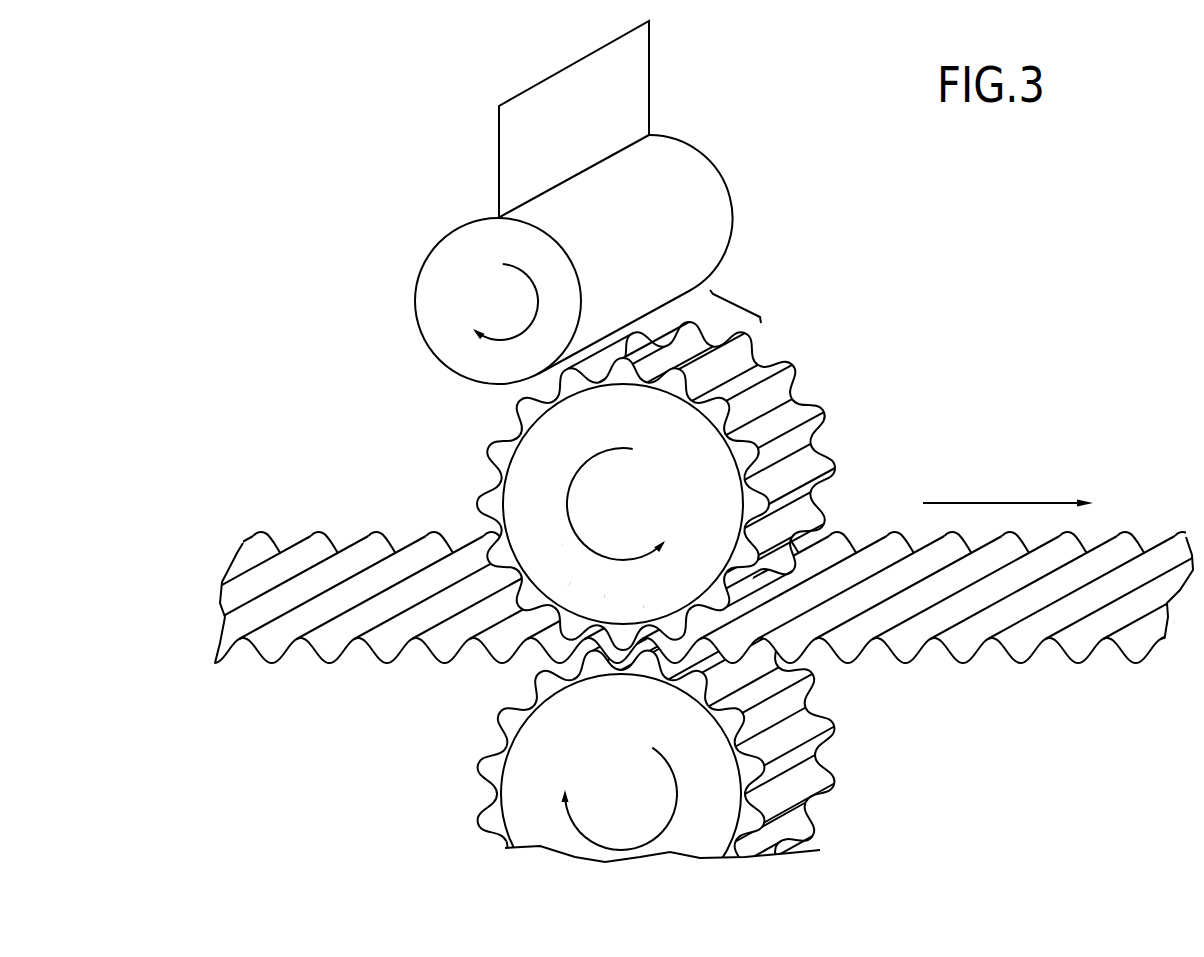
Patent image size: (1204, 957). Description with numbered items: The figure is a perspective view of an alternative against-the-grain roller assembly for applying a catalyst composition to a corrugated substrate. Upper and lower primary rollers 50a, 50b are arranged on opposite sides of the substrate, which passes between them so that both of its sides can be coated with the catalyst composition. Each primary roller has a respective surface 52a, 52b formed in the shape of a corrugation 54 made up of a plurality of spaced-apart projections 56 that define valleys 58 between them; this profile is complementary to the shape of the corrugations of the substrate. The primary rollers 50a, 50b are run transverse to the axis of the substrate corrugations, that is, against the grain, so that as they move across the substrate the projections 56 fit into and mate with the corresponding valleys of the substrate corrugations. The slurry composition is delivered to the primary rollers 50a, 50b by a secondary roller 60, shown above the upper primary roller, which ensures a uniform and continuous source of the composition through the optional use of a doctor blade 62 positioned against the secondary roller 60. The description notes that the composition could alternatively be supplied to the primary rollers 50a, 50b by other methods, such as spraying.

The primary roller 50a is at (623, 504).
The primary roller 50b is at (621, 794).
The surface 52a is at (684, 438).
The surface 52b is at (692, 770).
The corrugation 54 is at (735, 297).
The projections 56 is at (691, 320).
The valleys 58 is at (623, 504).
The secondary roller 60 is at (574, 259).
The doctor blade 62 is at (574, 119).